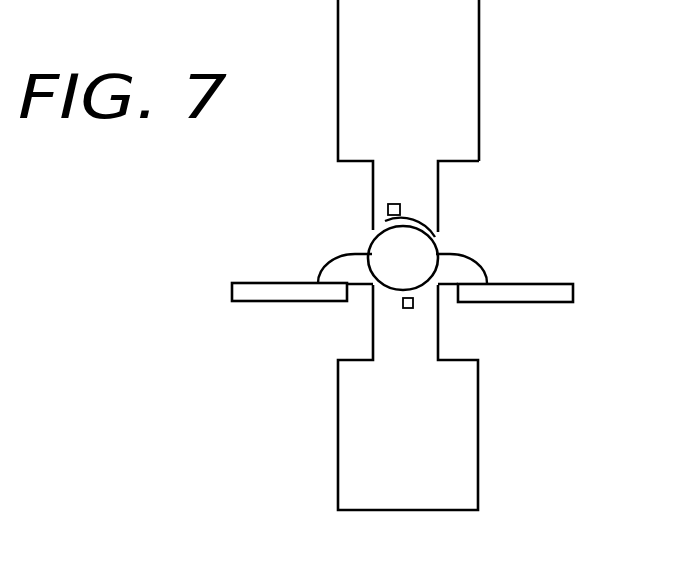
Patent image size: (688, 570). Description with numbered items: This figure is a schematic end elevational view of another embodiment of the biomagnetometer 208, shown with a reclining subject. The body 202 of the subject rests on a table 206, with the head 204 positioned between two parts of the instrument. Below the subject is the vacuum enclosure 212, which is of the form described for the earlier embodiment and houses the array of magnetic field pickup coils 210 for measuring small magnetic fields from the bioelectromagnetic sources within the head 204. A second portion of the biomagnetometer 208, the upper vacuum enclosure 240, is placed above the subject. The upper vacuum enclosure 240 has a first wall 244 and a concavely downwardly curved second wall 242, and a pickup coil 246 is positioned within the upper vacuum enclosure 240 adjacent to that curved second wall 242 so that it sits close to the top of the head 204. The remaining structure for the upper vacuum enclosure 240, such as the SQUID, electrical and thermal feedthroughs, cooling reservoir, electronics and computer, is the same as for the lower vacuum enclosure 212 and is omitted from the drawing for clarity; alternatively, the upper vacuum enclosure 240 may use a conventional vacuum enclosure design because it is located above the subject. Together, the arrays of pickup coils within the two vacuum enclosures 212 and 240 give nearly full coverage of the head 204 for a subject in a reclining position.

The upper vacuum enclosure 240 is at (479, 26).
The first wall 244 is at (480, 116).
The pickup coil 246 is at (388, 210).
The second wall 242 is at (420, 222).
The head 204 is at (438, 243).
The body 202 is at (477, 265).
The table 206 is at (257, 302).
The biomagnetometer 208 is at (515, 293).
The magnetic field pickup coils 210 is at (413, 303).
The vacuum enclosure 212 is at (478, 402).